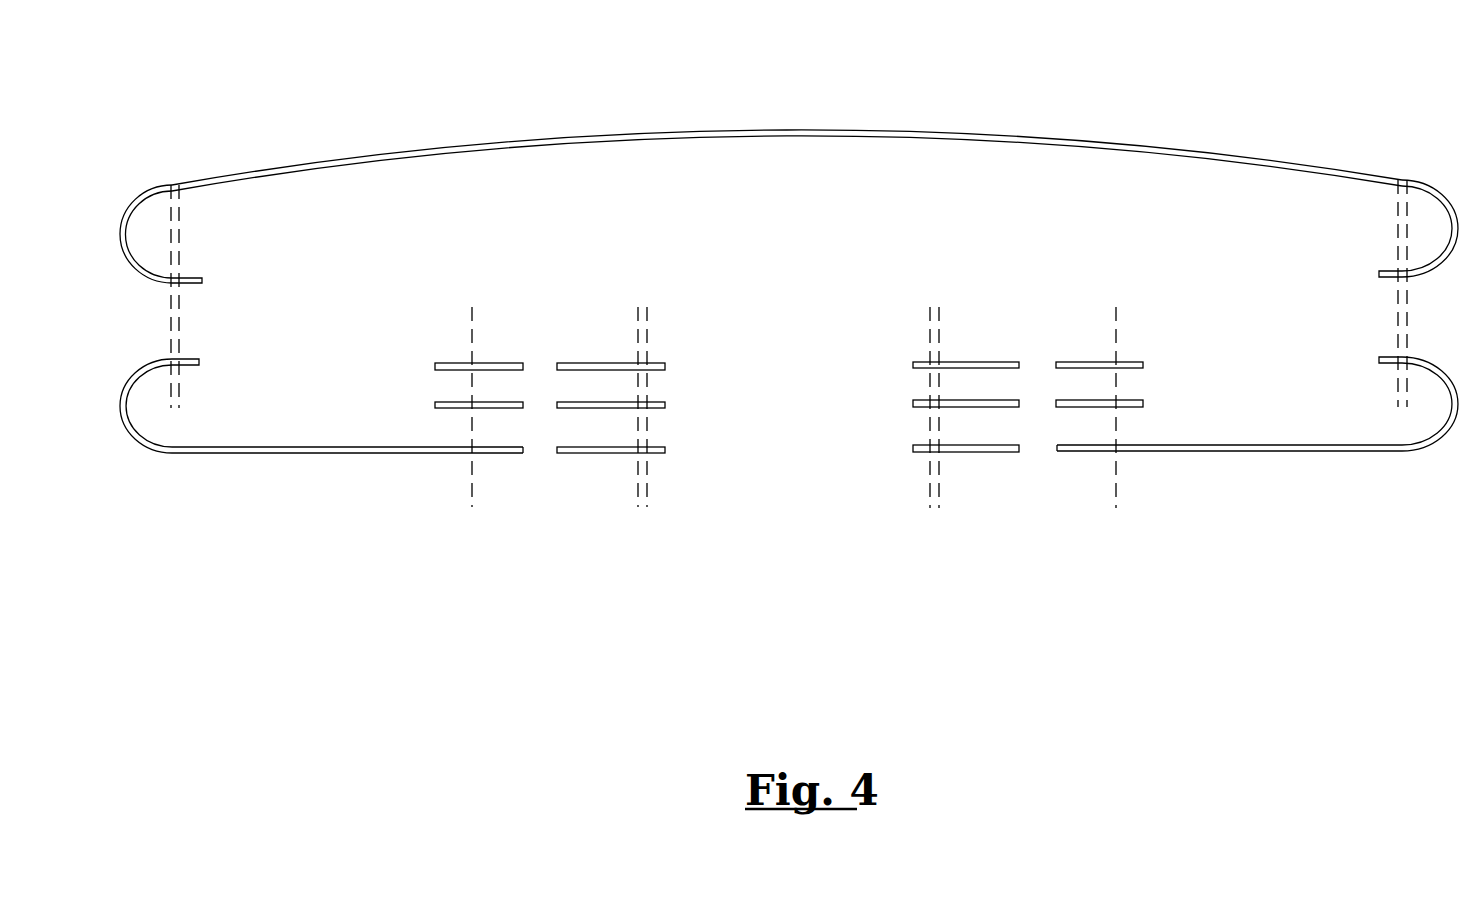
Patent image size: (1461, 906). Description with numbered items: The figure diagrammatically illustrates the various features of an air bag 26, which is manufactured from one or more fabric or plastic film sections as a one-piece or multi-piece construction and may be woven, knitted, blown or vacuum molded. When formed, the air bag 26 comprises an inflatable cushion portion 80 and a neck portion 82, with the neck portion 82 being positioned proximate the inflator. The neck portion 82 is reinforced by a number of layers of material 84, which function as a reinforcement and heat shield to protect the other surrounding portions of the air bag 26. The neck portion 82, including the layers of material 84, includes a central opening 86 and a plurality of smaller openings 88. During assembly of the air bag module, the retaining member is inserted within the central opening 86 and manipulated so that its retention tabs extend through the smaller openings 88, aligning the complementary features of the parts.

The air bag 26 is at (766, 128).
The inflatable cushion portion 80 is at (1138, 173).
The neck portion 82 is at (328, 453).
The layers of material 84 is at (1143, 361).
The central opening 86 is at (901, 405).
The smaller openings 88 is at (540, 452).